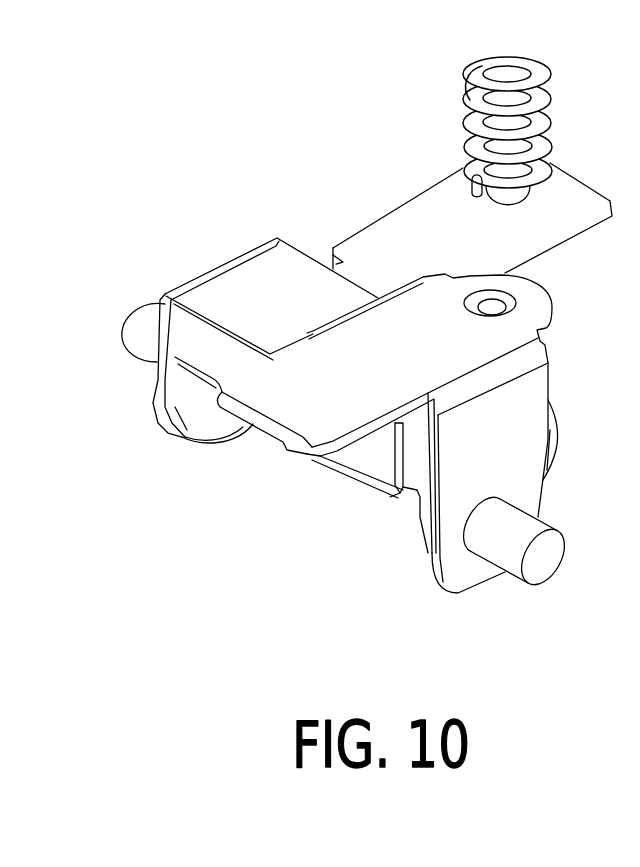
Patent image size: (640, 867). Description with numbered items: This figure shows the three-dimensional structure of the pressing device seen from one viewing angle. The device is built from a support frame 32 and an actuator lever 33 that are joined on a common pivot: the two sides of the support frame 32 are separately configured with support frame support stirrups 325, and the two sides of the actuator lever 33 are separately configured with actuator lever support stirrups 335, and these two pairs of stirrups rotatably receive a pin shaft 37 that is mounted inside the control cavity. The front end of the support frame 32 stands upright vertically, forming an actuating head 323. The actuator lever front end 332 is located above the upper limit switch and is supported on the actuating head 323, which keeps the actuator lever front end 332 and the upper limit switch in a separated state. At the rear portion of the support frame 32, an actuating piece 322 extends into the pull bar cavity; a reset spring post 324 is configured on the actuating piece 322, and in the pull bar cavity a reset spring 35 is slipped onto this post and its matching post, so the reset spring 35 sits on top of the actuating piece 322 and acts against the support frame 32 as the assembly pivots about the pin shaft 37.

The support frame 32 is at (214, 375).
The actuating piece 322 is at (400, 245).
The actuating head 323 is at (377, 448).
The reset spring post 324 is at (515, 195).
The support frame support stirrup 325 is at (170, 433).
The actuator lever 33 is at (252, 290).
The actuator lever front end 332 is at (290, 430).
The actuator lever support stirrup 335 is at (162, 405).
The reset spring 35 is at (471, 73).
The pin shaft 37 is at (543, 548).